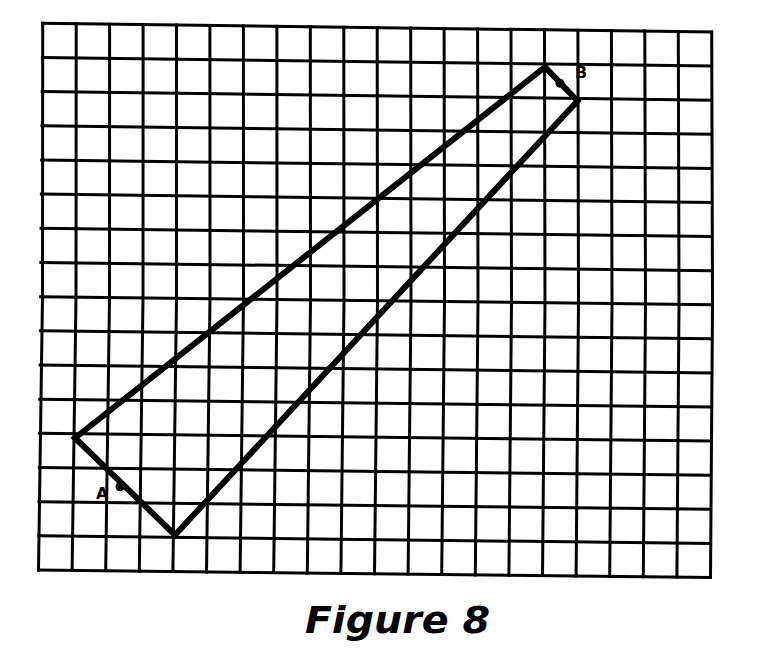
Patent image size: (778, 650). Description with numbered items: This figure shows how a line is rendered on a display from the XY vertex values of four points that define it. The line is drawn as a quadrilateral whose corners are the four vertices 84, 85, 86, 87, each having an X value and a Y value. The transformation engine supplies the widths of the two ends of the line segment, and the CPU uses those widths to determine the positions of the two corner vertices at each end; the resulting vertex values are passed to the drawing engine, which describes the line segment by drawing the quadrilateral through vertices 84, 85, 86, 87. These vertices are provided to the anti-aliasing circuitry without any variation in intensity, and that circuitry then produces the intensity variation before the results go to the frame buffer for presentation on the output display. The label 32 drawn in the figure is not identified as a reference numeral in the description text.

The display grid 32 is at (500, 363).
The vertex 84 is at (74, 436).
The vertex 85 is at (177, 537).
The vertex 86 is at (546, 65).
The vertex 87 is at (580, 98).